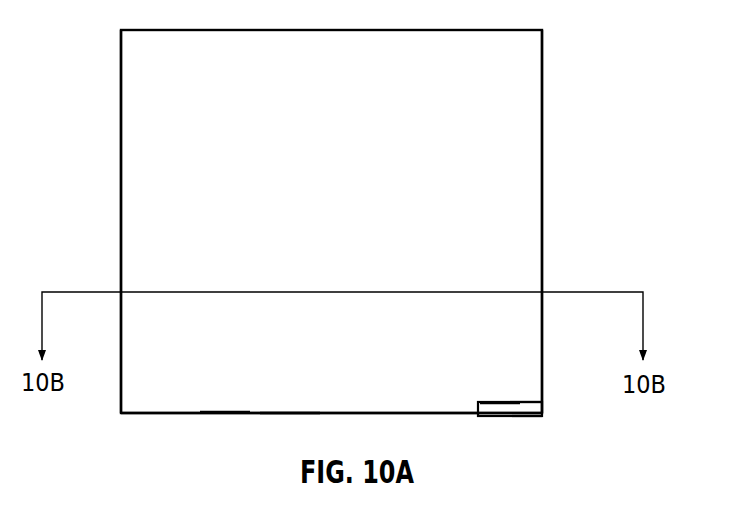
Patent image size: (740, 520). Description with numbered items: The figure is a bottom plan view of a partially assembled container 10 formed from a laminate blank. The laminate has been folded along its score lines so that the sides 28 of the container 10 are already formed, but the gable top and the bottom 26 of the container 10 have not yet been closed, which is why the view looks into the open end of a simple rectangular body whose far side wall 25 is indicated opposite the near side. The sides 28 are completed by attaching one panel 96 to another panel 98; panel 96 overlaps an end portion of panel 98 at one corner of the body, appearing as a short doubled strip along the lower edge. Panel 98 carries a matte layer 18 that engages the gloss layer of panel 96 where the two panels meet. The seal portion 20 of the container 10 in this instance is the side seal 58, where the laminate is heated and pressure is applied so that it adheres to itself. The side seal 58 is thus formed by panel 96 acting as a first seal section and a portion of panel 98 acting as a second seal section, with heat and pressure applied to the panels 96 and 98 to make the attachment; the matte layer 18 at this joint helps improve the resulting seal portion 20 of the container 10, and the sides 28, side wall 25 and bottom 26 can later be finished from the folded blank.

The container 10 is at (150, 158).
The sides 28 is at (119, 118).
The right side wall 25 is at (545, 185).
The bottom 26 is at (355, 410).
The panel 98 is at (291, 416).
The matte layer 18 is at (225, 410).
The seal portion 20 is at (491, 417).
The panel 96 is at (514, 402).
The side seal 58 is at (524, 417).